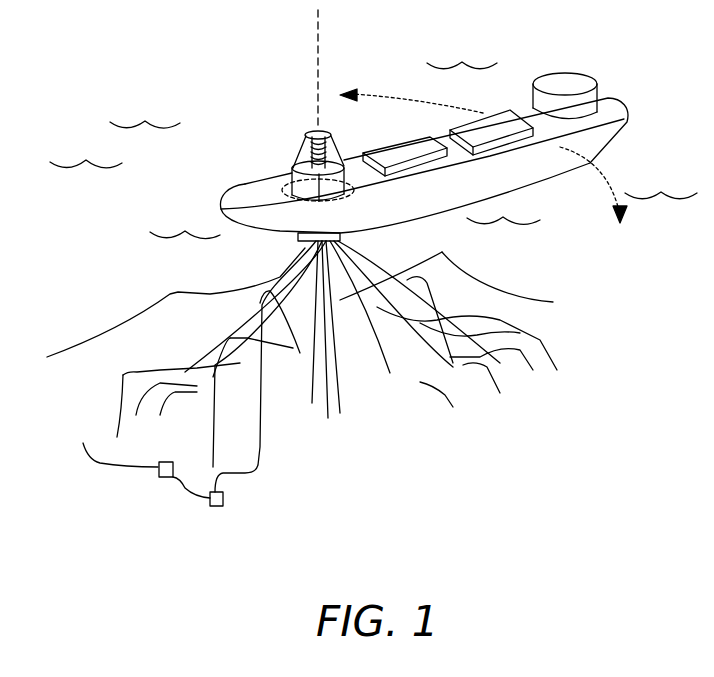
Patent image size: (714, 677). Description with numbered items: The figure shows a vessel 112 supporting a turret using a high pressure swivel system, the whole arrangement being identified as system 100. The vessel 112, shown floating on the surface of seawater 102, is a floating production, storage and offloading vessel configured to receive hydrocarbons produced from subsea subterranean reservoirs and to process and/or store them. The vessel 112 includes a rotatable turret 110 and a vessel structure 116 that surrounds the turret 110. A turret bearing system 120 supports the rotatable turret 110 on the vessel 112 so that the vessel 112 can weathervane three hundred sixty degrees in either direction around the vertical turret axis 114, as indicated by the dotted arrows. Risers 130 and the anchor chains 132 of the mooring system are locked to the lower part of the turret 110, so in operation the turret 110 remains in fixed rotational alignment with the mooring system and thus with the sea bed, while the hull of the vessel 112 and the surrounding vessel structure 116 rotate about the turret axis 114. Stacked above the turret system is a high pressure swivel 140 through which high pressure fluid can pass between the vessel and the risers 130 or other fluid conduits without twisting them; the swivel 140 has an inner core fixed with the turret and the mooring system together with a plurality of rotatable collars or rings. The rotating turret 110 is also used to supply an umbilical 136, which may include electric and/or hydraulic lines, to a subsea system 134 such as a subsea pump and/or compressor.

The marine seismic survey system 100 is at (564, 470).
The seawater 102 is at (697, 171).
The rotatable turret 110 is at (305, 183).
The vessel 112 is at (607, 132).
The vertical turret axis 114 is at (317, 67).
The vessel structure 116 is at (353, 182).
The turret bearing system 120 is at (283, 191).
The risers 130 is at (540, 340).
The anchor chains 132 is at (207, 293).
The subsea system 134 is at (223, 498).
The umbilical 136 is at (260, 447).
The high pressure swivel 140 is at (304, 140).